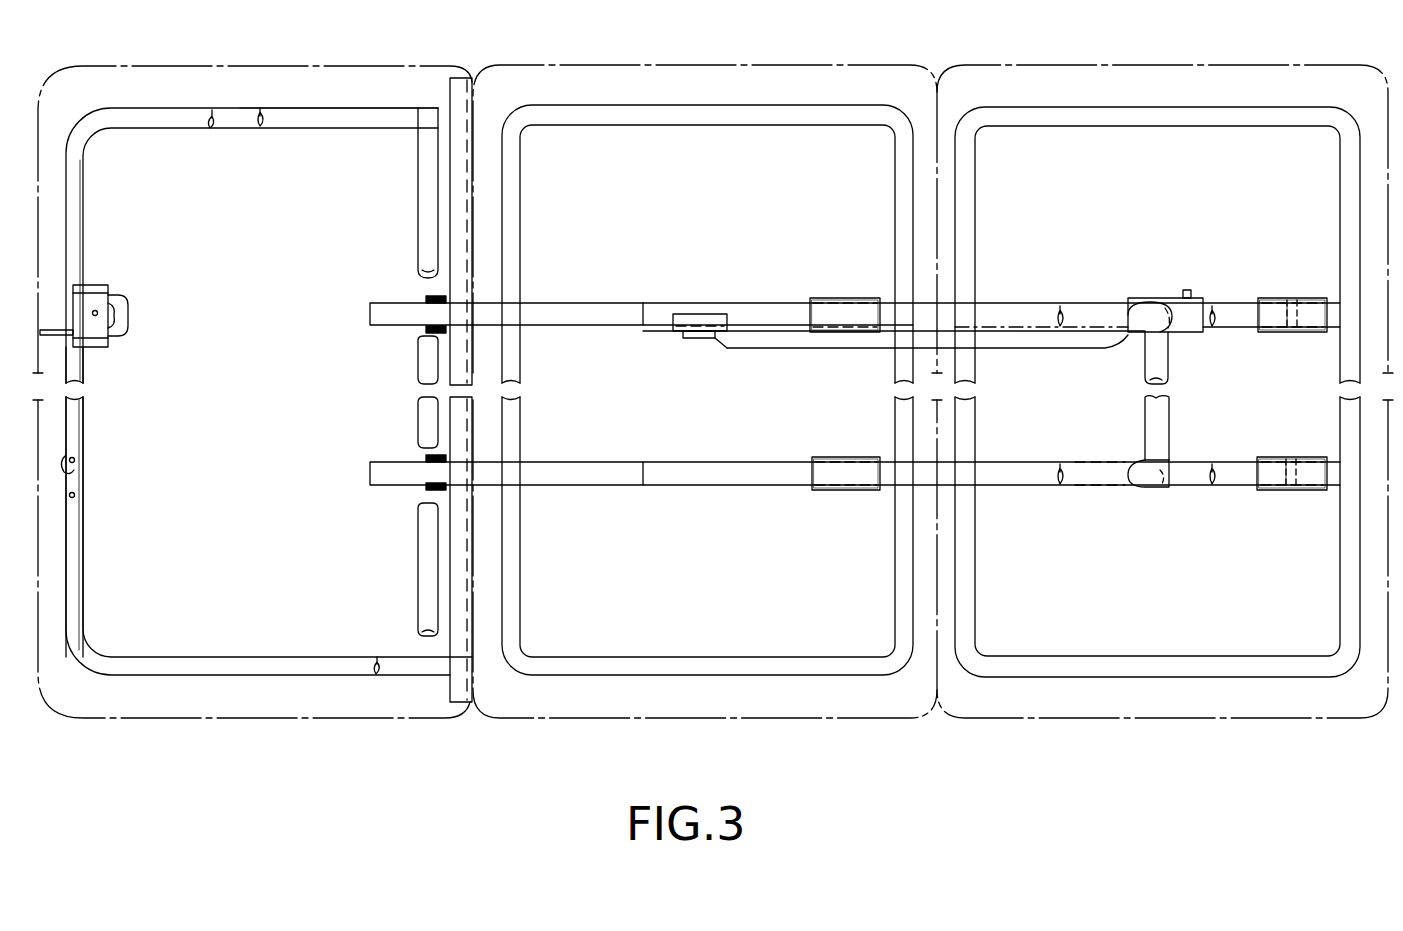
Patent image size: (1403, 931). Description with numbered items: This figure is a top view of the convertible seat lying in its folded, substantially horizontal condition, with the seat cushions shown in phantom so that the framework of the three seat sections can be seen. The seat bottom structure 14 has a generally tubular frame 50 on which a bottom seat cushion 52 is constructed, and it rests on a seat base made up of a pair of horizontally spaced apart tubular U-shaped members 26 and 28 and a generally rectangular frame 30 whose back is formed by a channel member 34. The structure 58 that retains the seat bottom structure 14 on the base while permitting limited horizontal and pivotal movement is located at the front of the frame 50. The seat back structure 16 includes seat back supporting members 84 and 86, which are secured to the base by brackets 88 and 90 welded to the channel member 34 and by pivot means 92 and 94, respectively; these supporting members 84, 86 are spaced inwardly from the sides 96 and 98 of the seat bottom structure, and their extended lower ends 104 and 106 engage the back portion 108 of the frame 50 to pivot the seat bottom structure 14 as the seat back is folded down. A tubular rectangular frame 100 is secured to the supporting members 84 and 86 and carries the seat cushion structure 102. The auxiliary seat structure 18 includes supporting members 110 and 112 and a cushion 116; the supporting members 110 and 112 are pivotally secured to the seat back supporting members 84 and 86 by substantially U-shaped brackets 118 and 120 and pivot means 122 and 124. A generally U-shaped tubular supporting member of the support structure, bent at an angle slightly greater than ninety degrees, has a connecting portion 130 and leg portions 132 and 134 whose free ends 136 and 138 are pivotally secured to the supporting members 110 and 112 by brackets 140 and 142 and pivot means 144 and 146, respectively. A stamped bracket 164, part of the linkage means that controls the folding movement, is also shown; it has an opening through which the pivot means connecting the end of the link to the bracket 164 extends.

The seat bottom structure 14 is at (300, 66).
The seat back structure 16 is at (786, 718).
The auxiliary seat structure 18 is at (1168, 65).
The tubular U-shaped member 26 is at (398, 656).
The tubular U-shaped member 28 is at (232, 128).
The rectangular frame 30 is at (84, 370).
The channel member 34 is at (474, 110).
The tubular frame 50 is at (84, 496).
The bottom seat cushion 52 is at (352, 720).
The retaining structure 58 is at (90, 285).
The seat back supporting member 84 is at (606, 486).
The seat back supporting member 86 is at (644, 326).
The bracket 88 is at (428, 490).
The bracket 90 is at (428, 296).
The pivot means 92 is at (428, 455).
The pivot means 94 is at (426, 333).
The side of seat bottom structure 96 is at (260, 675).
The side of seat bottom structure 98 is at (174, 108).
The tubular rectangular frame 100 is at (522, 204).
The seat cushion structure 102 is at (636, 65).
The extended lower end 104 is at (368, 470).
The extended lower end 106 is at (368, 312).
The back portion of frame 108 is at (418, 180).
The auxiliary seat structure supporting member 110 is at (1030, 486).
The auxiliary seat structure supporting member 112 is at (1004, 302).
The cushion 116 is at (1262, 718).
The bracket 118 is at (832, 457).
The bracket 120 is at (818, 298).
The pivot means 122 is at (838, 490).
The pivot means 124 is at (850, 298).
The connecting portion 130 is at (1145, 420).
The leg portion 132 is at (1186, 486).
The leg portion 134 is at (1226, 300).
The free end 136 is at (1300, 474).
The free end 138 is at (1302, 312).
The bracket 140 is at (1265, 492).
The bracket 142 is at (1268, 334).
The pivot means 144 is at (1288, 460).
The pivot means 146 is at (1292, 334).
The bracket 164 is at (692, 313).